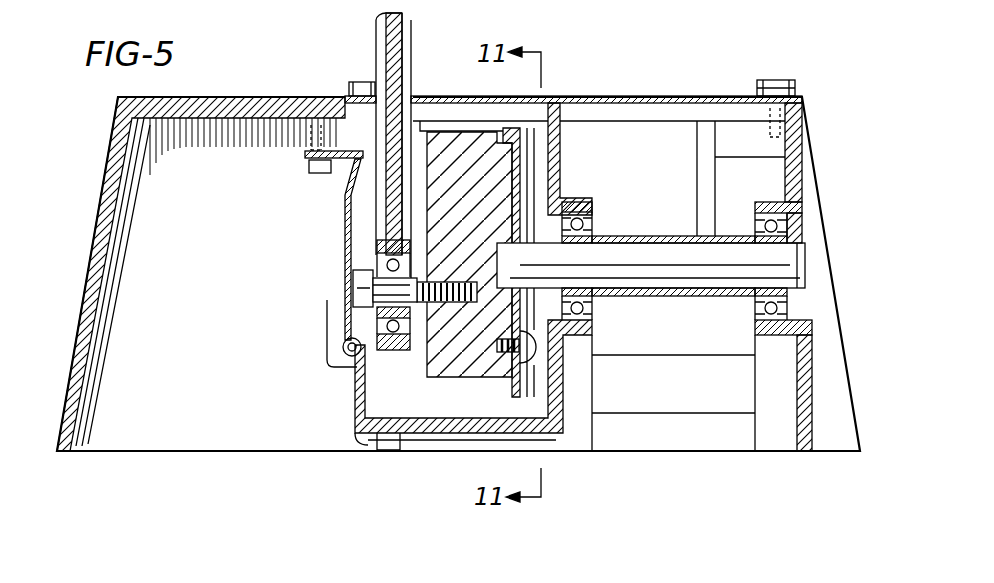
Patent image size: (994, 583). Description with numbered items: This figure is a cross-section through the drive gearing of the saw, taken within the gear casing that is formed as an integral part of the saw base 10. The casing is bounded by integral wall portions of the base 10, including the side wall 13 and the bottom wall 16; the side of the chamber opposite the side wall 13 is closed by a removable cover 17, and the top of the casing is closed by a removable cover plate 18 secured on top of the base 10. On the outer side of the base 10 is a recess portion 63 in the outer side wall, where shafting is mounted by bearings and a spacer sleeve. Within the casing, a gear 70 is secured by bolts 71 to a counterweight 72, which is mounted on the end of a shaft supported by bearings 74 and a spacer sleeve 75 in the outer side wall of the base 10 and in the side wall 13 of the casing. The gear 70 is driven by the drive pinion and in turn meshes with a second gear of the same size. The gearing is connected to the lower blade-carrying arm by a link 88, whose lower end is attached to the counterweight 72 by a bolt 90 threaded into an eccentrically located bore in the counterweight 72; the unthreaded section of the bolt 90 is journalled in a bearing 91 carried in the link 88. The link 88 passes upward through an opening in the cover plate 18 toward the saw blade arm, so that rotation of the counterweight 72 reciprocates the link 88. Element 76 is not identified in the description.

The saw base 10 is at (102, 217).
The side wall 13 is at (560, 148).
The bottom wall 16 is at (460, 420).
The removable cover 17 is at (345, 215).
The cover plate 18 is at (605, 97).
The recess portion 63 is at (793, 152).
The gear 70 is at (527, 388).
The bolts 71 is at (522, 347).
The counterweight 72 is at (457, 132).
The bearings 74 is at (790, 260).
The spacer sleeve 75 is at (762, 300).
The sleeve 76 is at (655, 237).
The link 88 is at (392, 58).
The bolt 90 is at (348, 295).
The bearing 91 is at (360, 272).